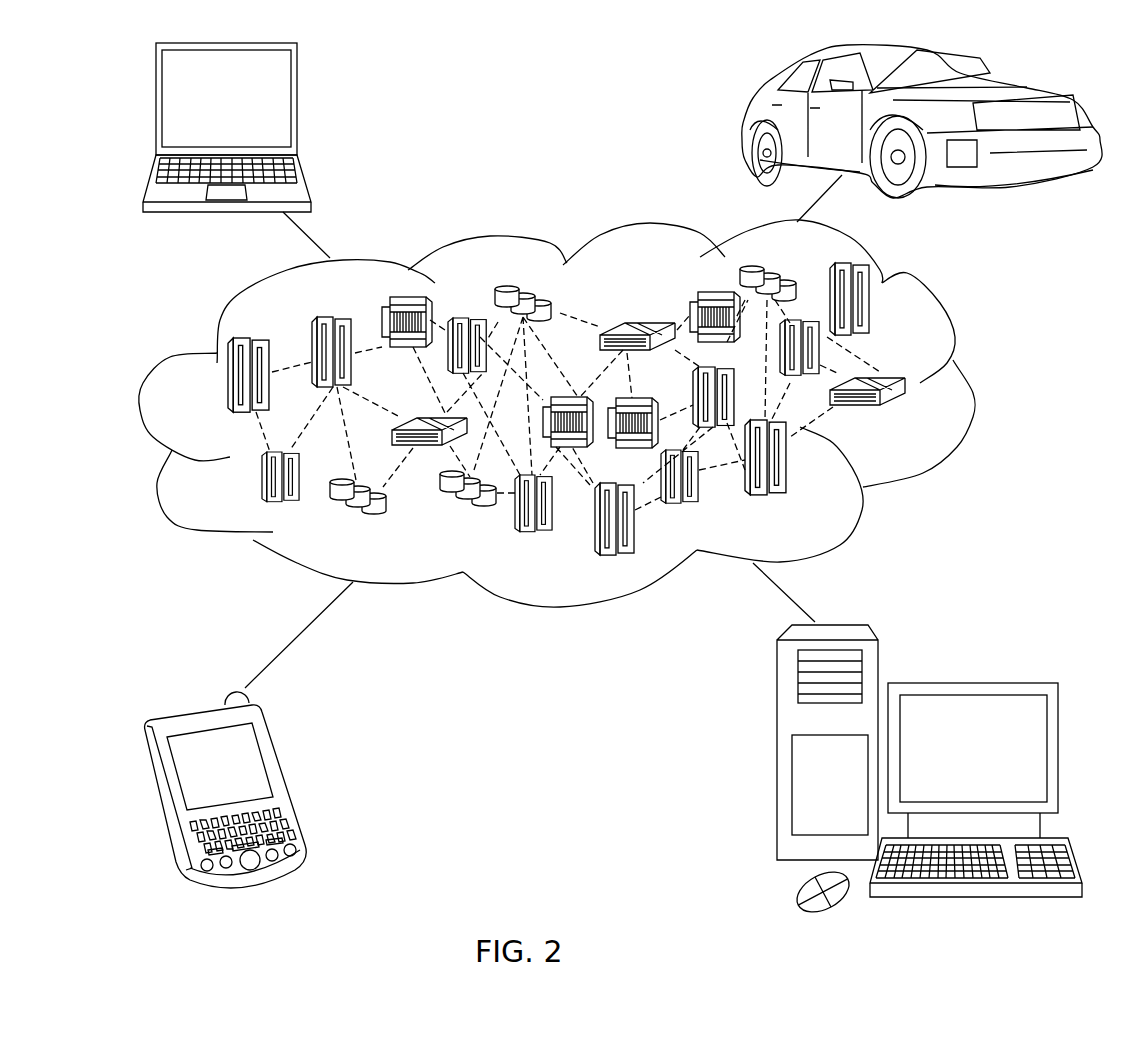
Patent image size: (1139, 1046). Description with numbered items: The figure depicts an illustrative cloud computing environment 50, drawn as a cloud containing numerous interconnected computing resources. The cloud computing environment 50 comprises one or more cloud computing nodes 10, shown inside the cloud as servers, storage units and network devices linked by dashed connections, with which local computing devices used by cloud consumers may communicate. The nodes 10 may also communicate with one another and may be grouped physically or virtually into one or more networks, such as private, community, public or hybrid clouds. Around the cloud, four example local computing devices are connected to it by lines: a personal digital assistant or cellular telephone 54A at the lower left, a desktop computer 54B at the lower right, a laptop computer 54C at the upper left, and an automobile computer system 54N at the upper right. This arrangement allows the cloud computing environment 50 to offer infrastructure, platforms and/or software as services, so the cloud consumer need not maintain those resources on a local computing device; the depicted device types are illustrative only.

The laptop computer 54C is at (298, 107).
The automobile computer system 54N is at (745, 123).
The personal digital assistant or cellular telephone 54A is at (287, 780).
The desktop computer 54B is at (970, 683).
The cloud computing environment 50 is at (587, 413).
The cloud computing node 10 is at (912, 417).